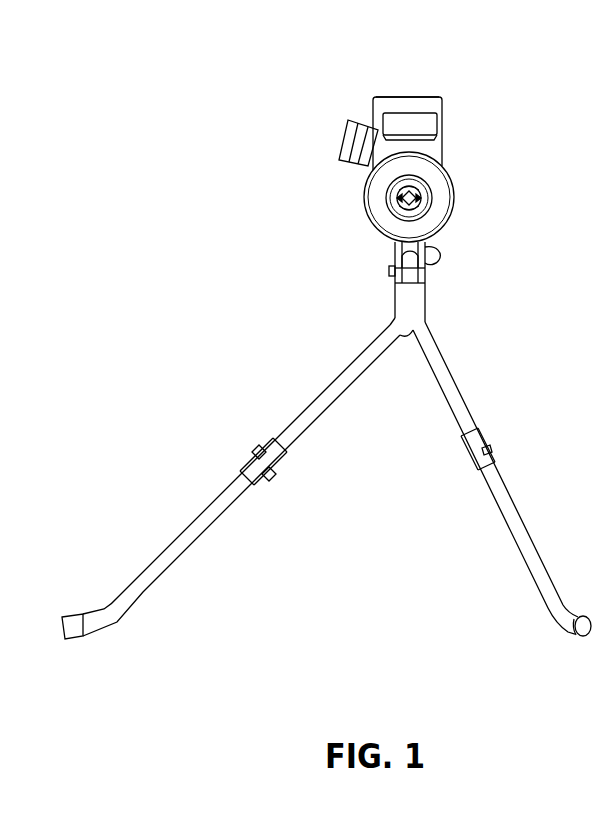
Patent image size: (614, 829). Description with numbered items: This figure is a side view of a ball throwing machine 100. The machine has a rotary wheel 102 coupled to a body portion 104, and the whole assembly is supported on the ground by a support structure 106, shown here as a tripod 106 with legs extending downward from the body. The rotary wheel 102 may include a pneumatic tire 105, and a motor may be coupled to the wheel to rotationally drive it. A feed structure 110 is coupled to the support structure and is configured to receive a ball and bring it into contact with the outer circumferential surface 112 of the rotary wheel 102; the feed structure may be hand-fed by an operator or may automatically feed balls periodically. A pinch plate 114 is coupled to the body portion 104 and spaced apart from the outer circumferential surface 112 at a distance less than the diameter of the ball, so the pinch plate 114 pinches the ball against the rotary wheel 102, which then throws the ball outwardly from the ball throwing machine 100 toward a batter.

The ball throwing machine 100 is at (236, 136).
The rotary wheel 102 is at (431, 182).
The body portion 104 is at (437, 150).
The pneumatic tire 105 is at (435, 207).
The support structure 106 is at (237, 490).
The feed structure 110 is at (344, 124).
The outer circumferential surface 112 is at (403, 152).
The pinch plate 114 is at (420, 78).